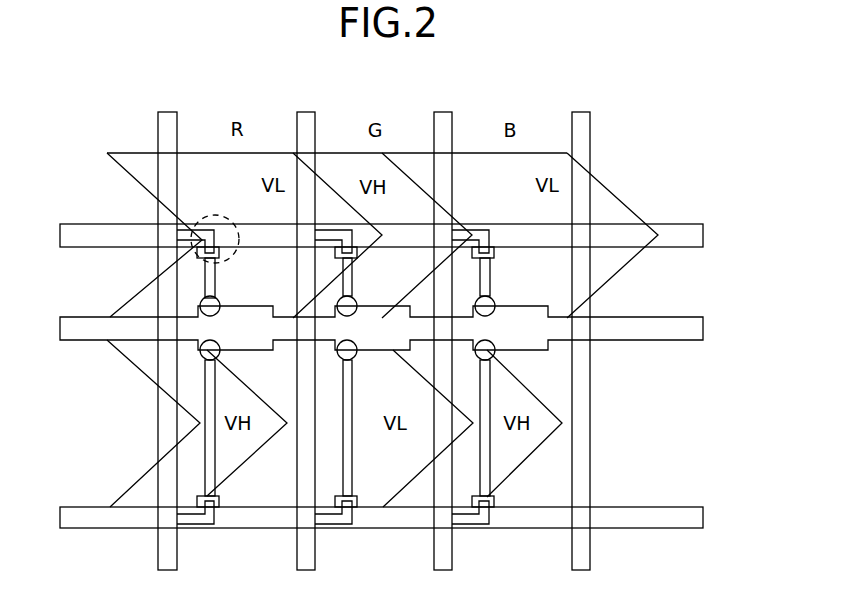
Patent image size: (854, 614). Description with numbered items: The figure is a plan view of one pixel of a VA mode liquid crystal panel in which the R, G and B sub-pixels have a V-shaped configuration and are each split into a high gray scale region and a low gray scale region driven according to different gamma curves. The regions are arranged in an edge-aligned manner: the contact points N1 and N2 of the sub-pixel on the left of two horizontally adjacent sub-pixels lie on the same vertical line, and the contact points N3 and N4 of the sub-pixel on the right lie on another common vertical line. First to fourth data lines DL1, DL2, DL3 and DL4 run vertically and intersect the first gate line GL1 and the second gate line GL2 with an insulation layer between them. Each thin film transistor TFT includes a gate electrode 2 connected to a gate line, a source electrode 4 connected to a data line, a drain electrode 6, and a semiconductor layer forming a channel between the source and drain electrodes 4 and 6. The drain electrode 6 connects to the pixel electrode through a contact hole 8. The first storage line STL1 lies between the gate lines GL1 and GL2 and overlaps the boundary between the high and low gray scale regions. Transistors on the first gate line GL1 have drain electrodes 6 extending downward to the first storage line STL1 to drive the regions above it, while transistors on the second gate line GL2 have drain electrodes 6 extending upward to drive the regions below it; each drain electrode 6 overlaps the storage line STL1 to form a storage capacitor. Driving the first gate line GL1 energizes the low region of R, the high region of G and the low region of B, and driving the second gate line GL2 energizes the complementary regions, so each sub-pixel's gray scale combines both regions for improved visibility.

The gate electrode 2 is at (197, 252).
The source electrode 4 is at (222, 246).
The drain electrode 6 is at (218, 264).
The contact hole 8 is at (220, 305).
The thin film transistor TFT is at (210, 217).
The contact point N1 is at (204, 236).
The contact point N2 is at (198, 421).
The contact point N3 is at (472, 233).
The contact point N4 is at (474, 421).
The first data line DL1 is at (168, 112).
The second data line DL2 is at (307, 112).
The third data line DL3 is at (445, 112).
The fourth data line DL4 is at (580, 112).
The first gate line GL1 is at (703, 236).
The second gate line GL2 is at (703, 518).
The first storage line STL1 is at (703, 330).